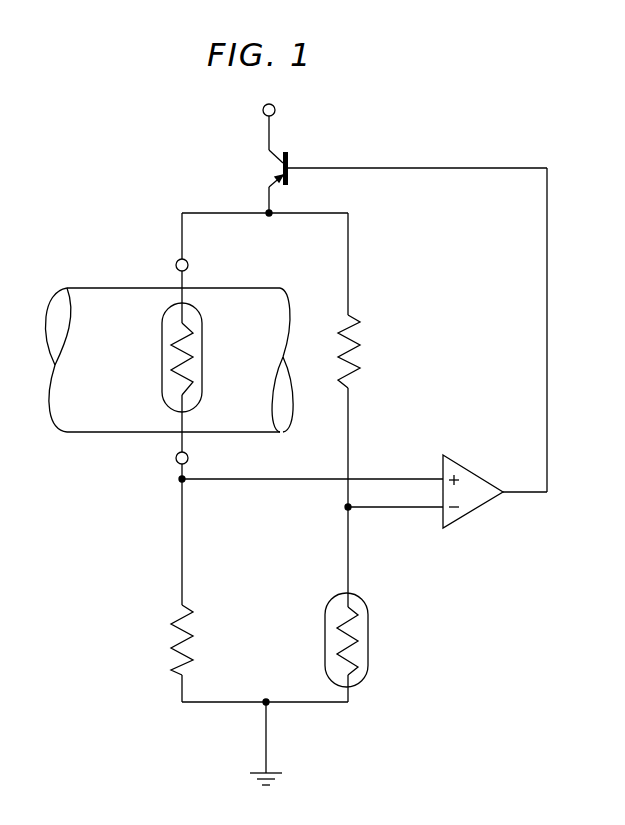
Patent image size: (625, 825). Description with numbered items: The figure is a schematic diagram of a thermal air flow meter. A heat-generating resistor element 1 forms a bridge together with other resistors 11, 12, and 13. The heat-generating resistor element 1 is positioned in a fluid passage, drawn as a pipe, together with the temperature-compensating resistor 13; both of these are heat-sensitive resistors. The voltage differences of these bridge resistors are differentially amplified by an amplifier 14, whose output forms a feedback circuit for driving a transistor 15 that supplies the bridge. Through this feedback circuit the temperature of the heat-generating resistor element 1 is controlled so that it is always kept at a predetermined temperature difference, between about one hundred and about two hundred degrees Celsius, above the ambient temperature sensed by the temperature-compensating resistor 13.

The heat-generating resistor element 1 is at (167, 332).
The resistor 11 is at (365, 355).
The resistor 12 is at (170, 637).
The temperature-compensating resistor 13 is at (367, 650).
The amplifier 14 is at (468, 513).
The transistor 15 is at (272, 168).